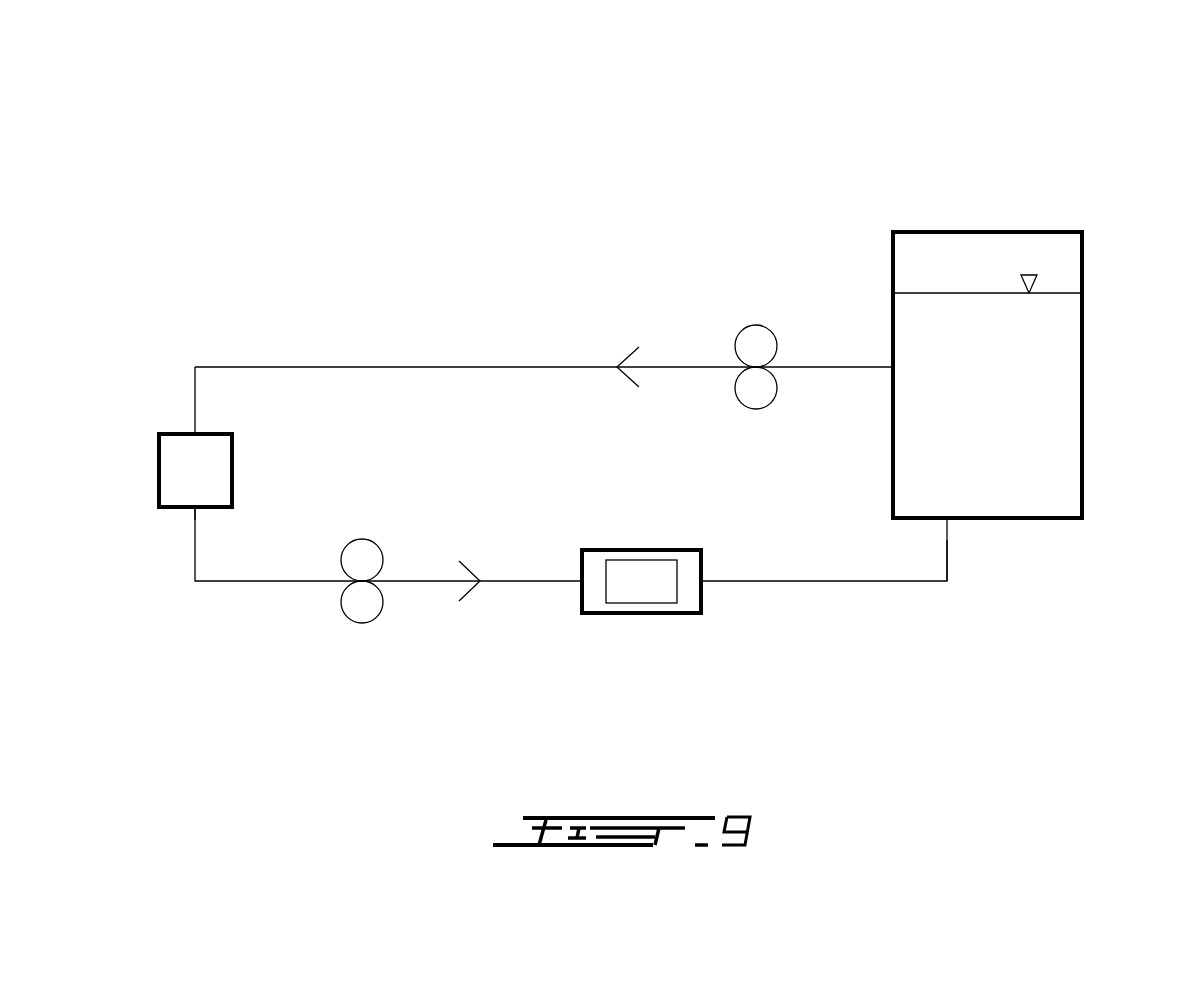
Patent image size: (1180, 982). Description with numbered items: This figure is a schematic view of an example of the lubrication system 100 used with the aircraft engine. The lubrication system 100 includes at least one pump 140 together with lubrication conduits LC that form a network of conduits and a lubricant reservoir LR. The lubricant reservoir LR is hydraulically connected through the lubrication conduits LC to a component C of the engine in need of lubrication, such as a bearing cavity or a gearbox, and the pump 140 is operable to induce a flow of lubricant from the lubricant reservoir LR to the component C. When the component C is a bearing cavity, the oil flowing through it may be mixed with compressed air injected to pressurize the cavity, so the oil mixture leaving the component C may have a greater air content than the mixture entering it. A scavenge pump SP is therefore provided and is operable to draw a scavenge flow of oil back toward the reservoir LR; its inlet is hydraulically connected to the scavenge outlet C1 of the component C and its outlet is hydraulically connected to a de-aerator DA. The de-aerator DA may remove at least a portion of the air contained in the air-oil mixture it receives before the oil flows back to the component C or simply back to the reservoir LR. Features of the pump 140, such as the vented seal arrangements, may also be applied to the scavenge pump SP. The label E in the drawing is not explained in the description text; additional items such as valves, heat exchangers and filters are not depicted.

The lubrication system 100 is at (1067, 202).
The pump 140 is at (771, 315).
The component C is at (158, 467).
The scavenge outlet C1 is at (186, 520).
The lubrication conduits LC is at (445, 366).
The lubricant reservoir LR is at (996, 405).
The scavenge pump SP is at (362, 634).
The de-aerator DA is at (660, 597).
The equipment E is at (1006, 668).